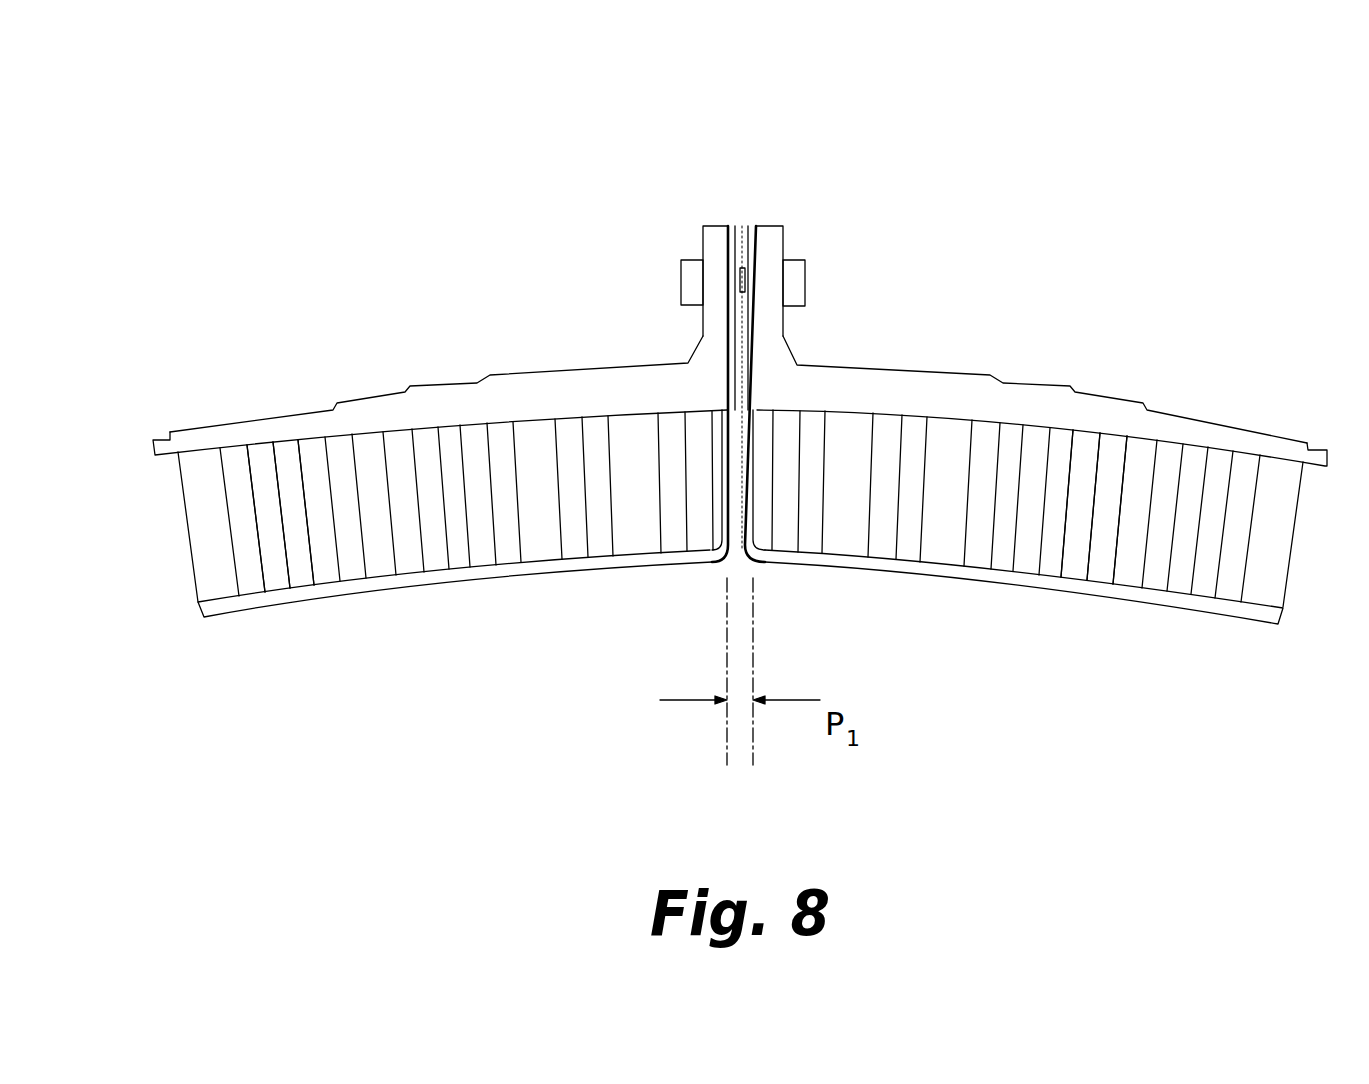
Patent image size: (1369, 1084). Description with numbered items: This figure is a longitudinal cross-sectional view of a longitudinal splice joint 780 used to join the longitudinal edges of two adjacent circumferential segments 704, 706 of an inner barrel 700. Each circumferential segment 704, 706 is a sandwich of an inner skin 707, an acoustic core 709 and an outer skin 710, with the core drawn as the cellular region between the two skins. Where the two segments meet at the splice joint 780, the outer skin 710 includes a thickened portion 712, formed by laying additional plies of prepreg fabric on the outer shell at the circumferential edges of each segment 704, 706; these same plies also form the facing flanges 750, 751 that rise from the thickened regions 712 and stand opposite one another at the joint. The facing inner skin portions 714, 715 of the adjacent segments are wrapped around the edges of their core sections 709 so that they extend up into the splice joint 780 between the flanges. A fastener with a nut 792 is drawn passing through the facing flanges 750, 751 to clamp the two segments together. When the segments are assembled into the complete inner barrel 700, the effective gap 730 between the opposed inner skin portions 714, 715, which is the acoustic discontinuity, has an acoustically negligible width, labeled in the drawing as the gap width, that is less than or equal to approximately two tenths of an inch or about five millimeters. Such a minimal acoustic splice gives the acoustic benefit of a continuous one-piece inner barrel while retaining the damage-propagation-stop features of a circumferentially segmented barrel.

The inner barrel 700 is at (1081, 170).
The circumferential segment 704 is at (407, 632).
The circumferential segment 706 is at (1191, 658).
The inner skin 707 is at (286, 608).
The acoustic core 709 is at (187, 563).
The outer skin 710 is at (165, 434).
The thickened portion 712 is at (533, 392).
The inner skin portion 714 is at (707, 503).
The inner skin portion 715 is at (778, 499).
The effective gap 730 is at (722, 738).
The facing flange 750 is at (679, 245).
The facing flange 751 is at (803, 233).
The longitudinal splice joint 780 is at (806, 316).
The nut 792 is at (816, 275).